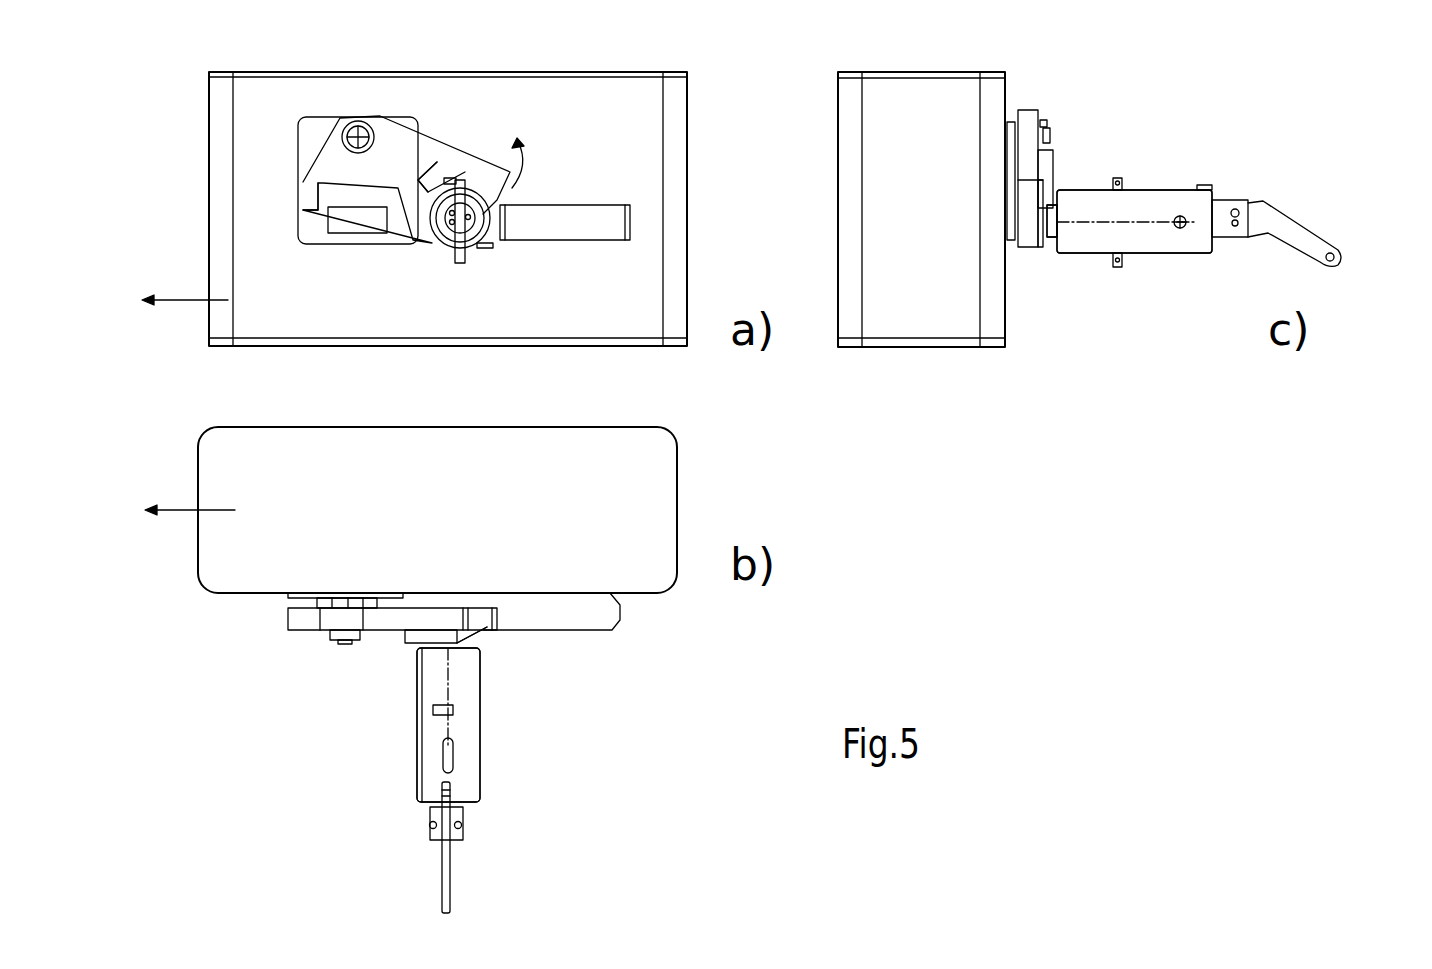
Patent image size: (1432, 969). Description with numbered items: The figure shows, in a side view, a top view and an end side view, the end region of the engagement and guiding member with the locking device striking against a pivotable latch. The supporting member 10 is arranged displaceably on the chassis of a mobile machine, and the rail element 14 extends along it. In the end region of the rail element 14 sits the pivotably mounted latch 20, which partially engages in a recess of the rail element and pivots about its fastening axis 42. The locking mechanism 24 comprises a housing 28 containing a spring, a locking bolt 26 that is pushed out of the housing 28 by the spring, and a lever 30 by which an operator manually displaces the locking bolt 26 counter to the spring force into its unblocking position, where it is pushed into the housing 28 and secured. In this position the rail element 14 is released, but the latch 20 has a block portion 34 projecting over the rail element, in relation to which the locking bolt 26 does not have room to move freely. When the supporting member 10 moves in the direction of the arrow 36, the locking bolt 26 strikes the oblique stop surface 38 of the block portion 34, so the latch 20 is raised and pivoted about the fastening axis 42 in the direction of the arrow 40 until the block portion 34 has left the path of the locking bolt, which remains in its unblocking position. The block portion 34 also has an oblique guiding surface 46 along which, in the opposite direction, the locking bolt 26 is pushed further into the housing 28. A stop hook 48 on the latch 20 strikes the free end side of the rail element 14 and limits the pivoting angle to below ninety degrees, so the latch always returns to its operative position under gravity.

The supporting member 10 is at (700, 124).
The rail element 14 is at (582, 203).
The latch 20 is at (383, 128).
The locking mechanism 24 is at (438, 250).
The locking bolt 26 is at (1050, 240).
The housing 28 is at (1170, 240).
The lever 30 is at (1300, 237).
The block portion 34 is at (440, 162).
The arrow 36 is at (178, 305).
The oblique stop surface 38 is at (1045, 190).
The arrow 40 is at (512, 188).
The fastening axis 42 is at (345, 130).
The oblique guiding surface 46 is at (473, 637).
The stop hook 48 is at (313, 198).